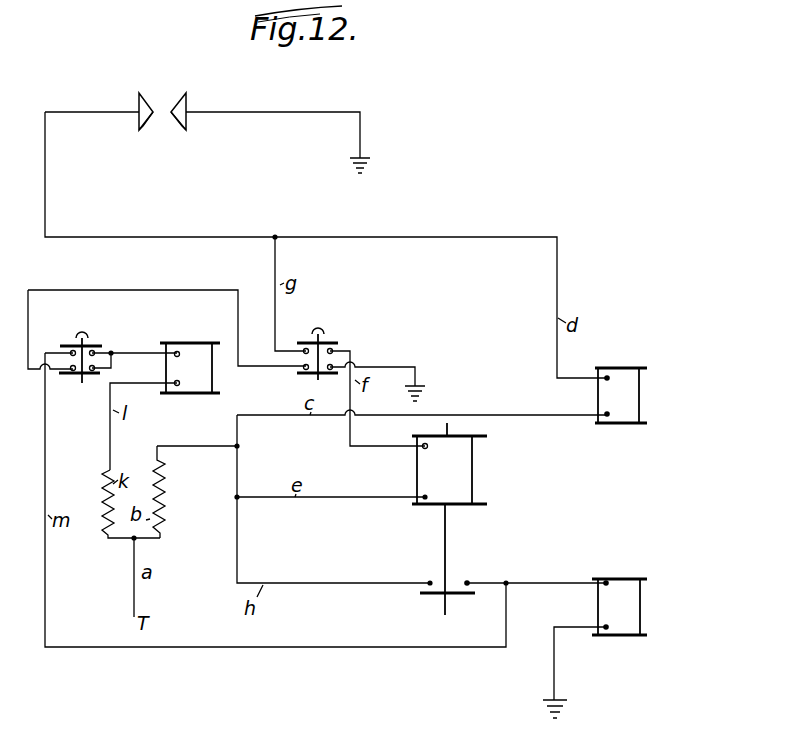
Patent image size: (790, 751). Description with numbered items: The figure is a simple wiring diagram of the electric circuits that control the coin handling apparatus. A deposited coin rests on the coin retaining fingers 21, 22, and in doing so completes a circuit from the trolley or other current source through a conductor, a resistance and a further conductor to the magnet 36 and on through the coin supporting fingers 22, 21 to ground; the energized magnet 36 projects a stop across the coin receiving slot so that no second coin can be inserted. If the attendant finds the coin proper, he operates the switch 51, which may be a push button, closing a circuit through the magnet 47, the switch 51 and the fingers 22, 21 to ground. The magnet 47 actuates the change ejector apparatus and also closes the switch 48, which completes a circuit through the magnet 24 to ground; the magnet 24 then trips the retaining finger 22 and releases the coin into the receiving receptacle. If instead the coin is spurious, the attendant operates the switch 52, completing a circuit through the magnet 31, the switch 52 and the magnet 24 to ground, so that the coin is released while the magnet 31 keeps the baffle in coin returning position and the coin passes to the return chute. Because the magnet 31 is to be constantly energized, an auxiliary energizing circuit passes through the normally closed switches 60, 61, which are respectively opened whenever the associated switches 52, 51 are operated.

The coin retaining finger 22 is at (145, 130).
The coin retaining finger 21 is at (179, 129).
The switch 52 is at (100, 327).
The switch 60 is at (78, 378).
The magnet 31 is at (200, 387).
The switch 51 is at (330, 340).
The switch 61 is at (308, 381).
The magnet 36 is at (632, 420).
The magnet 47 is at (433, 498).
The switch 48 is at (460, 571).
The magnet 24 is at (637, 606).